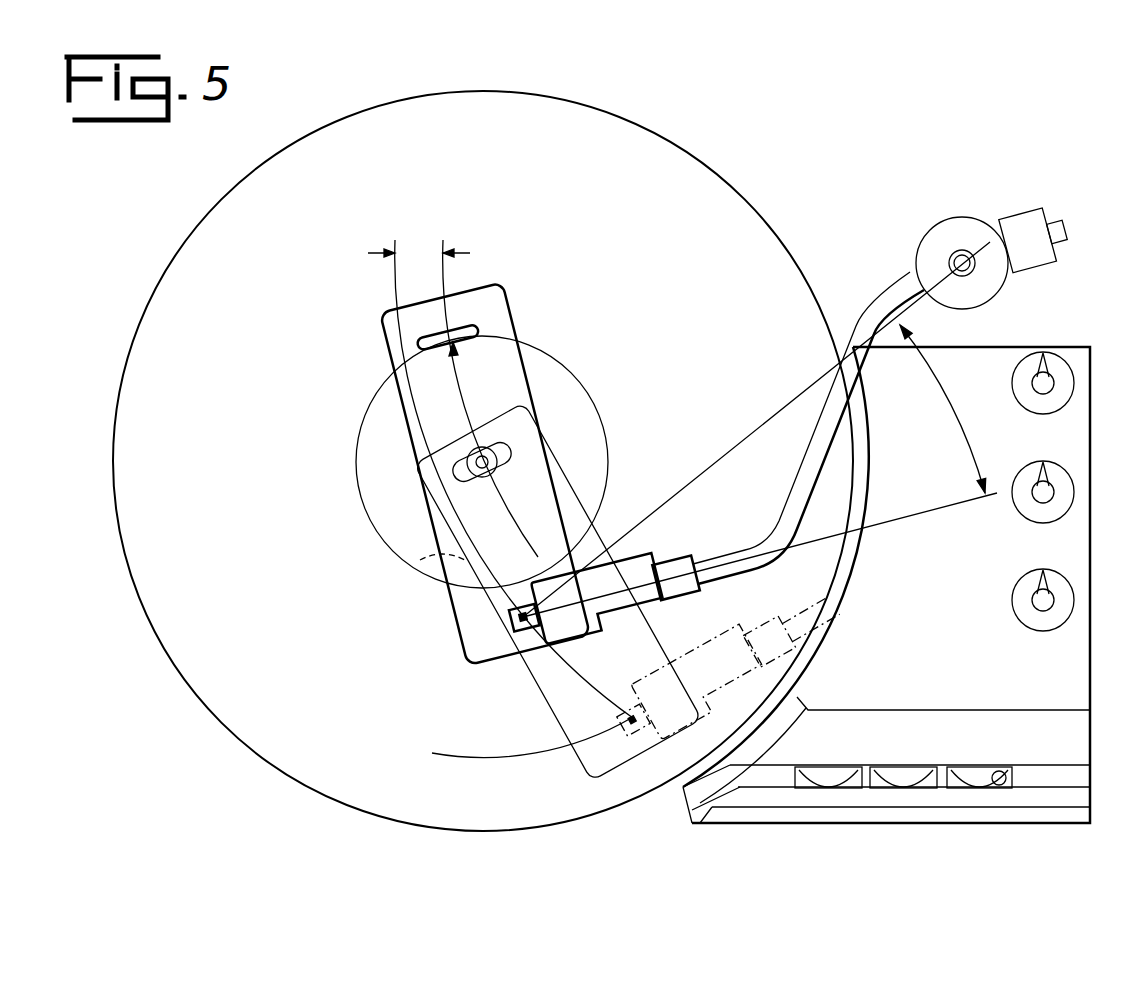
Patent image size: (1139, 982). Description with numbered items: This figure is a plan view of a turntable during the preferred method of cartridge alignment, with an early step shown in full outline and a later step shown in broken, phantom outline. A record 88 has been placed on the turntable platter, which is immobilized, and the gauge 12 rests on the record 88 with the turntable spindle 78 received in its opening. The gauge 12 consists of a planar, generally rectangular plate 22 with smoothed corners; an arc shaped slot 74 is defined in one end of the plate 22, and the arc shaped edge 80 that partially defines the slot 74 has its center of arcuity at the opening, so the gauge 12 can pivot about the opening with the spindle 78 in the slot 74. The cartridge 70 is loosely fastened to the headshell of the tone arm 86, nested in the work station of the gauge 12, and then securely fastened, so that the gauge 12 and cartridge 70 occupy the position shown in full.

The gauge 12 is at (397, 358).
The plate 22 is at (513, 383).
The cartridge 70 is at (525, 625).
The slot 74 is at (478, 328).
The turntable spindle 78 is at (467, 470).
The arc shaped edge 80 is at (472, 341).
The tone arm 86 is at (797, 486).
The record 88 is at (142, 561).